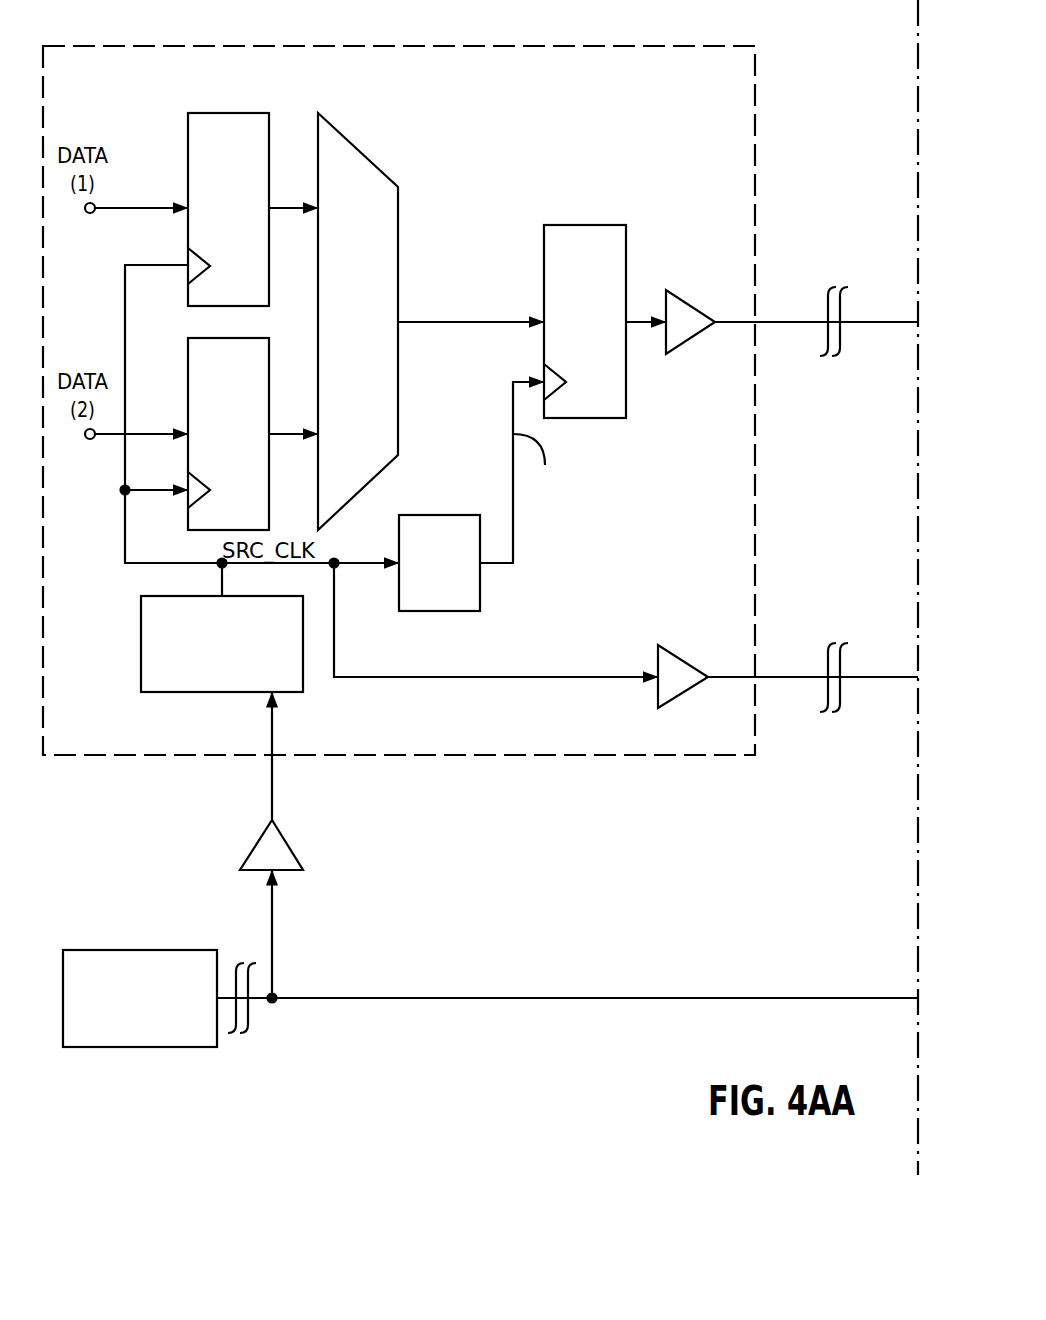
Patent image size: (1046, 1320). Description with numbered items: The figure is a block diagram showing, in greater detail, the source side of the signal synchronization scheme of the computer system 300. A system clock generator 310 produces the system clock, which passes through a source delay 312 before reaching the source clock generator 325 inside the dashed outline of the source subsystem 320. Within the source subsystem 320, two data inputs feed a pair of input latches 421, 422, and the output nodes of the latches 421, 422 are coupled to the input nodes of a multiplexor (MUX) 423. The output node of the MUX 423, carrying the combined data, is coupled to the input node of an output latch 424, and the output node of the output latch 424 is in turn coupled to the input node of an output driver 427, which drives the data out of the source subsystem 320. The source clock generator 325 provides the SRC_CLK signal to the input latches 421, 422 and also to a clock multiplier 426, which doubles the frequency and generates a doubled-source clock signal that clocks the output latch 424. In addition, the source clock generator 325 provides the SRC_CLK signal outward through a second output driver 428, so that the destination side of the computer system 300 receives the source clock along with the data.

The computer system 300 is at (788, 90).
The source subsystem 320 is at (537, 77).
The input latch 421 is at (237, 113).
The input latch 422 is at (188, 368).
The multiplexor (MUX) 423 is at (364, 153).
The output latch 424 is at (575, 225).
The clock multiplier 426 is at (465, 515).
The output driver 427 is at (676, 290).
The output driver 428 is at (683, 645).
The source clock generator 325 is at (141, 660).
The source delay 312 is at (258, 843).
The system clock generator 310 is at (178, 950).